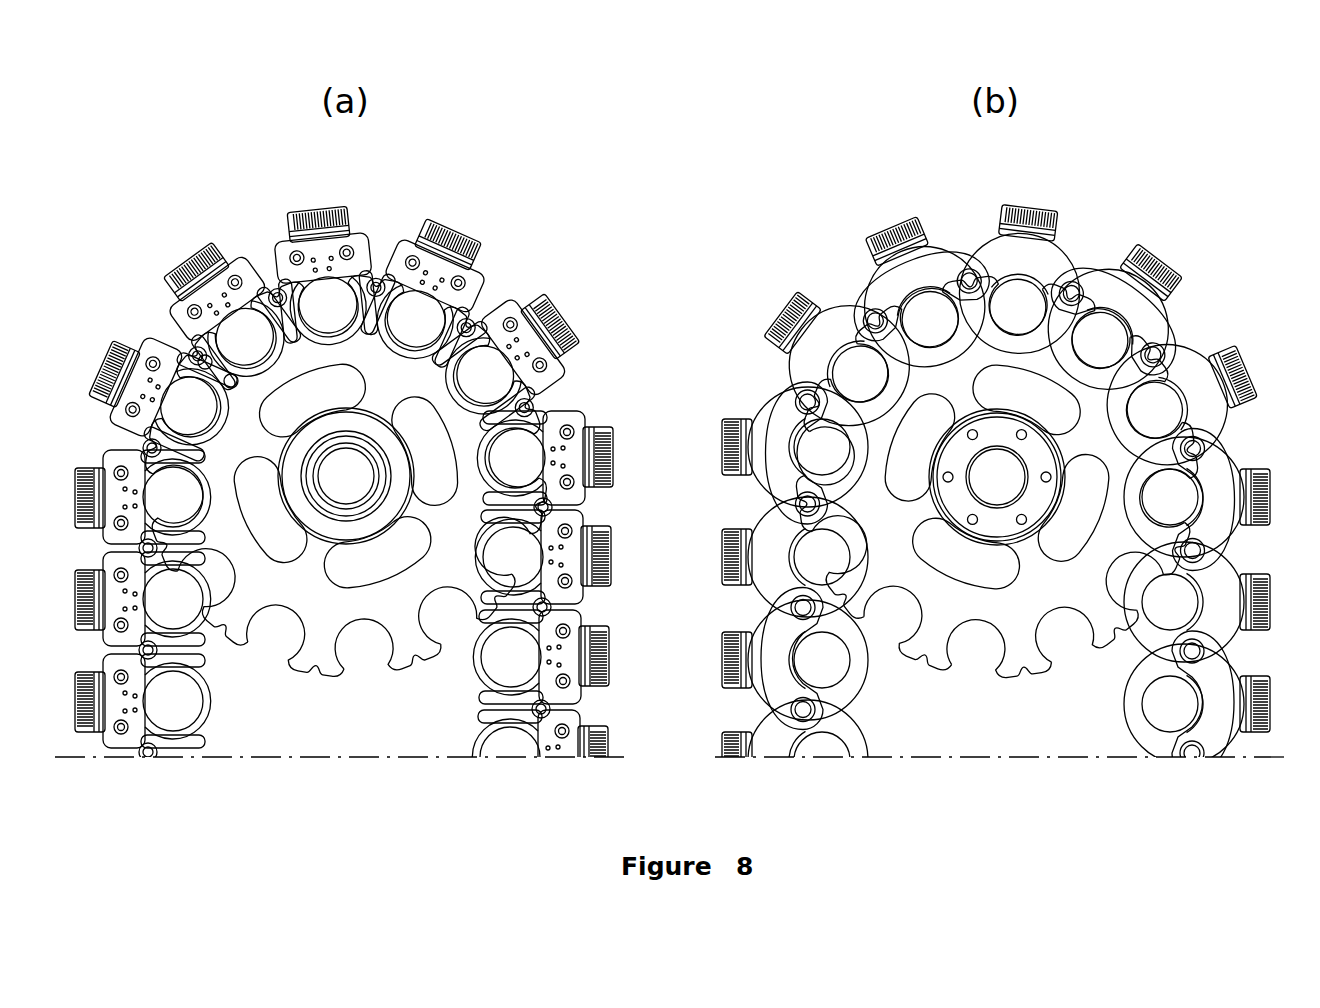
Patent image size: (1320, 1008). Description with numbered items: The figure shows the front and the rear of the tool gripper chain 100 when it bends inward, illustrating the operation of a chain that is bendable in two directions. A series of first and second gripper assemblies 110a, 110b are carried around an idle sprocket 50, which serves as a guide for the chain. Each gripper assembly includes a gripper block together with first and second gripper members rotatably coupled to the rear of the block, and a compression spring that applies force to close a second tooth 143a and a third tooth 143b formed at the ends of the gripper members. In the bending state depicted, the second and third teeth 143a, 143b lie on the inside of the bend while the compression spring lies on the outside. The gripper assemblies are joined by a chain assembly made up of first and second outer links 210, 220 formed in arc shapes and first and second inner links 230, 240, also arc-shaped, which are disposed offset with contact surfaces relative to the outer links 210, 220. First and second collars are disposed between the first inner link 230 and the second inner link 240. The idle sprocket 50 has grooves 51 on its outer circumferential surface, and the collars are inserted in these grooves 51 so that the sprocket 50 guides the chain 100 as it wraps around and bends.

The tool gripper chain 100 is at (145, 225).
The first gripper assembly 110a is at (215, 266).
The second gripper assembly 110b is at (332, 206).
The second tooth 143a is at (240, 376).
The third tooth 143b is at (212, 366).
The idle sprocket 50 is at (348, 618).
The groove 51 is at (232, 638).
The first outer link 210 is at (864, 280).
The second outer link 220 is at (1165, 320).
The first inner link 230 is at (800, 340).
The second inner link 240 is at (1064, 250).